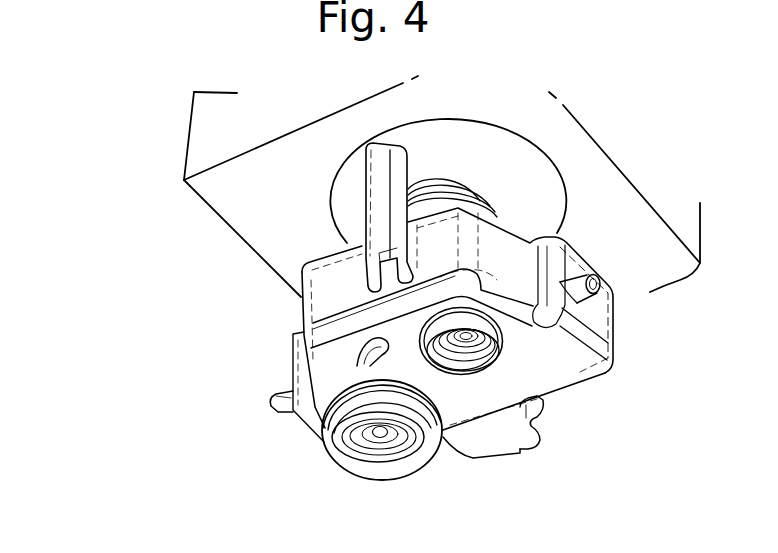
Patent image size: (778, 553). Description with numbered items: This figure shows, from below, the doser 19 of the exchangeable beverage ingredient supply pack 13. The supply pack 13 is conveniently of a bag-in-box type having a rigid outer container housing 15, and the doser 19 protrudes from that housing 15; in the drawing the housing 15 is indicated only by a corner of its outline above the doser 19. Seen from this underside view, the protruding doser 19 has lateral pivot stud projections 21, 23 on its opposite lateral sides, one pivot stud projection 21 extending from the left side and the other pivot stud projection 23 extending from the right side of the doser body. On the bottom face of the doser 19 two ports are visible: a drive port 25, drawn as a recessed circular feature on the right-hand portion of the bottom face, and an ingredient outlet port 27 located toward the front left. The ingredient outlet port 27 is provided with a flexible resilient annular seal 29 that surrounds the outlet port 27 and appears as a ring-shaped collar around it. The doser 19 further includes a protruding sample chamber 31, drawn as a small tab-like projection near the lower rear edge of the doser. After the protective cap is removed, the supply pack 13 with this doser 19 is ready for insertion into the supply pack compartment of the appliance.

The beverage ingredient supply pack 13 is at (155, 163).
The rigid outer container housing 15 is at (258, 213).
The doser 19 is at (338, 285).
The lateral pivot stud projection 21 is at (278, 398).
The lateral pivot stud projection 23 is at (580, 290).
The drive port 25 is at (467, 337).
The ingredient outlet port 27 is at (365, 435).
The flexible resilient annular seal 29 is at (403, 460).
The protruding sample chamber 31 is at (537, 417).